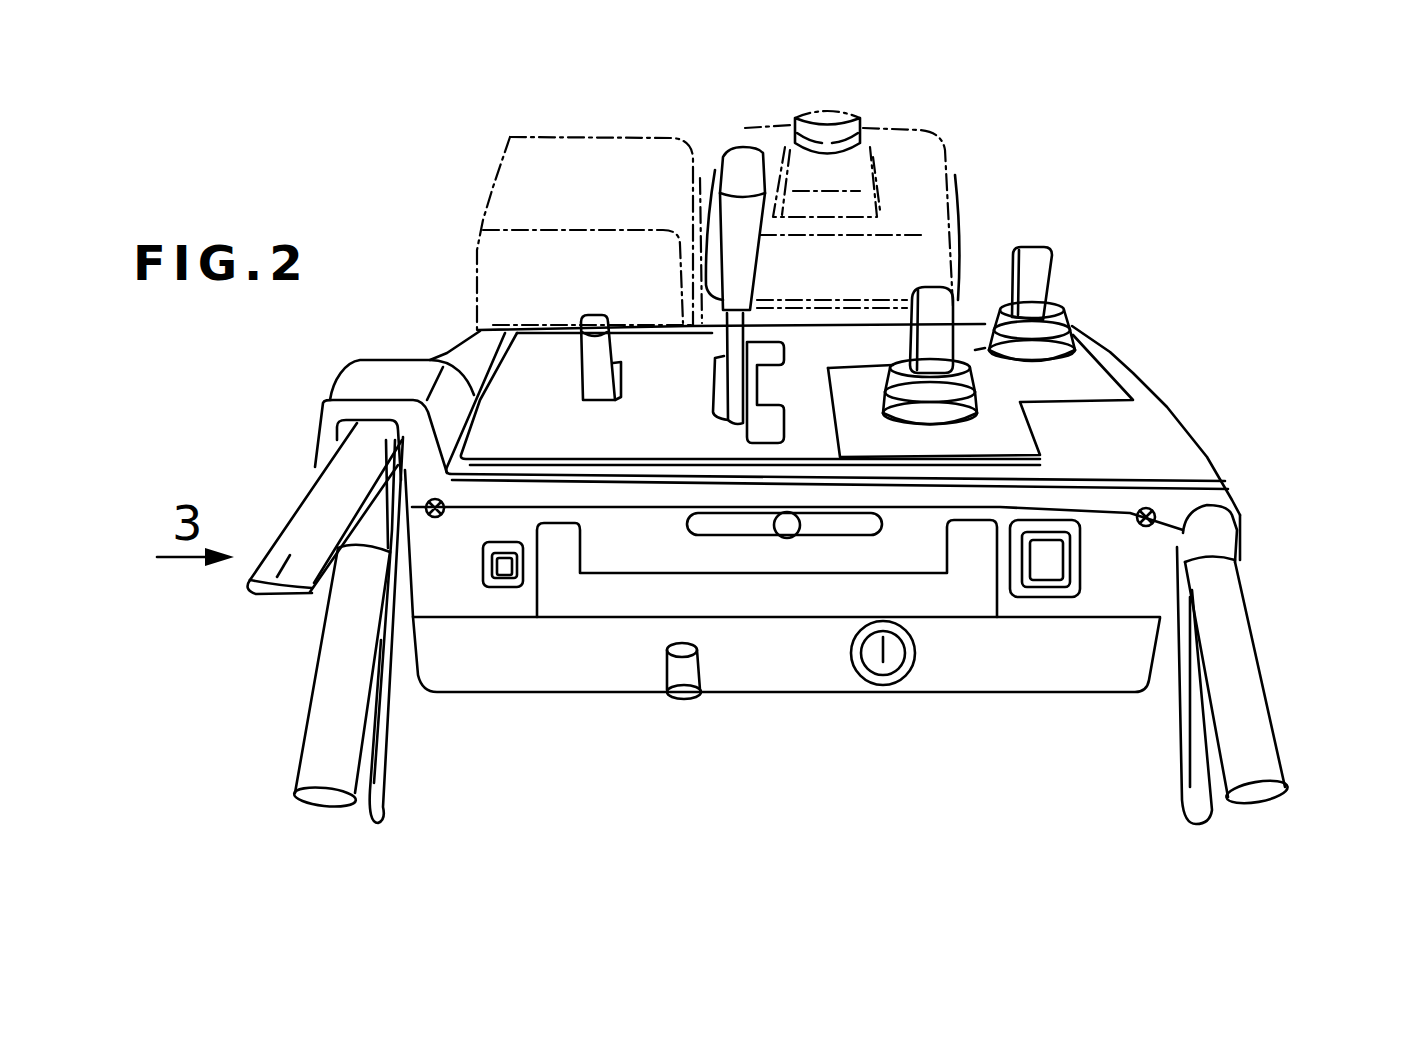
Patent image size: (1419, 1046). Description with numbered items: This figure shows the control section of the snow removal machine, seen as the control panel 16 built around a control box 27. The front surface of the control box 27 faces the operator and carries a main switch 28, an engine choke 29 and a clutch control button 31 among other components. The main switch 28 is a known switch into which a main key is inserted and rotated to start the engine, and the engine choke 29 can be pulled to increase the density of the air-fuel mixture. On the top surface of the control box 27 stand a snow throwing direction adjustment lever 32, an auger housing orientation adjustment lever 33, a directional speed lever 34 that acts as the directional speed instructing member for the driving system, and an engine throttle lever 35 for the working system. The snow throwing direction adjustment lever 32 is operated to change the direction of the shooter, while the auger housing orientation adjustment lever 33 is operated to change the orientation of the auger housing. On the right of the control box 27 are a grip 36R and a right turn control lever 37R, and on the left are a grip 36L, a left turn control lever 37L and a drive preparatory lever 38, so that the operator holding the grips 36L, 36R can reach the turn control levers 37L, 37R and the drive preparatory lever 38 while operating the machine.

The control panel 16 is at (1130, 330).
The control box 27 is at (1150, 440).
The main switch 28 is at (890, 677).
The engine choke 29 is at (683, 697).
The clutch control button 31 is at (1047, 567).
The snow throwing direction adjustment lever 32 is at (1030, 260).
The auger housing orientation adjustment lever 33 is at (938, 317).
The directional speed lever 34 is at (738, 173).
The engine throttle lever 35 is at (593, 335).
The grip 36L is at (320, 737).
The grip 36R is at (1252, 726).
The left turn control lever 37L is at (387, 825).
The right turn control lever 37R is at (1182, 747).
The drive preparatory lever 38 is at (273, 590).